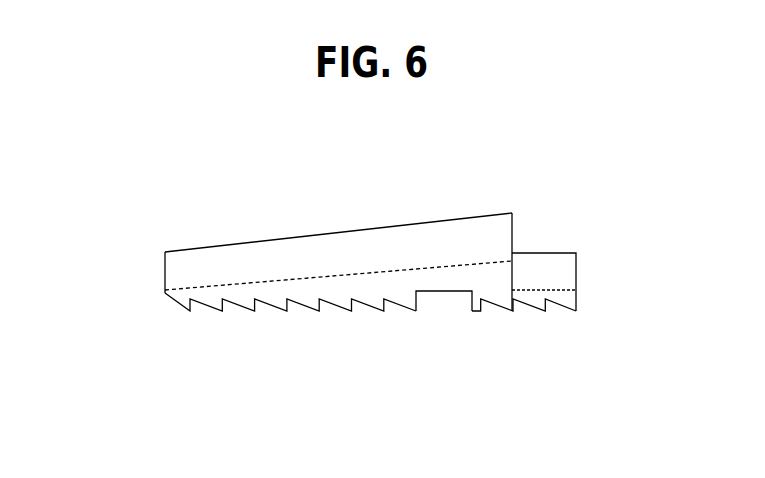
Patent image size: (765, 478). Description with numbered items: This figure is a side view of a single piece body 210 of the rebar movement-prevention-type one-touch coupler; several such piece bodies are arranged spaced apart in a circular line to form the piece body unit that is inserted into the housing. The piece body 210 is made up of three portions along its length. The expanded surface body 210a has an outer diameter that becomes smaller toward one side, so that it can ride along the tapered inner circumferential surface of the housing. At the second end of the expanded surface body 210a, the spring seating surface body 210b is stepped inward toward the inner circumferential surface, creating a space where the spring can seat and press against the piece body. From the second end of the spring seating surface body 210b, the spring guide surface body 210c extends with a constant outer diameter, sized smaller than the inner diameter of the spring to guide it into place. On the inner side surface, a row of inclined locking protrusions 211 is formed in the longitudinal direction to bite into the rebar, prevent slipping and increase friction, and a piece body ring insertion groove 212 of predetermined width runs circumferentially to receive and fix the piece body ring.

The piece body 210 is at (134, 140).
The expanded surface body 210a is at (303, 236).
The spring seating surface body 210b is at (513, 232).
The spring guide surface body 210c is at (558, 251).
The locking protrusion 211 is at (273, 312).
The piece body ring insertion groove 212 is at (442, 297).